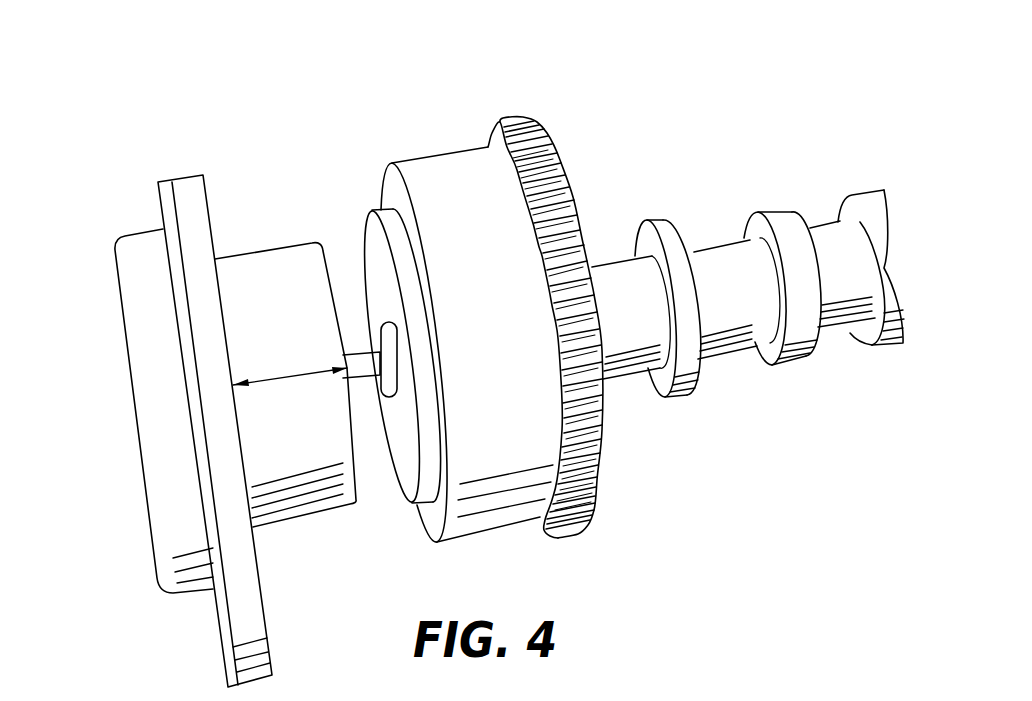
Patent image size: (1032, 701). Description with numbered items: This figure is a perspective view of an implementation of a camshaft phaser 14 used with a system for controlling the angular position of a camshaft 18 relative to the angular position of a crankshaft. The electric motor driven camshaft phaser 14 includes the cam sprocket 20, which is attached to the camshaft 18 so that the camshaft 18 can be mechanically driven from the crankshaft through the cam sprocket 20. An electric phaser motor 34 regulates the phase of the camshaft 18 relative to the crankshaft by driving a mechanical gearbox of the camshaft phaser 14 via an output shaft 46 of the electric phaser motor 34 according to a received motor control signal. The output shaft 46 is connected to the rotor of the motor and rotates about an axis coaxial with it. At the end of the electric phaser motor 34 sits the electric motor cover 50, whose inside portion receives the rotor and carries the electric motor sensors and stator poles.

The camshaft phaser 14 is at (522, 70).
The camshaft 18 is at (787, 195).
The cam sprocket 20 is at (530, 117).
The electric phaser motor 34 is at (253, 238).
The output shaft 46 is at (345, 352).
The electric motor cover 50 is at (128, 405).